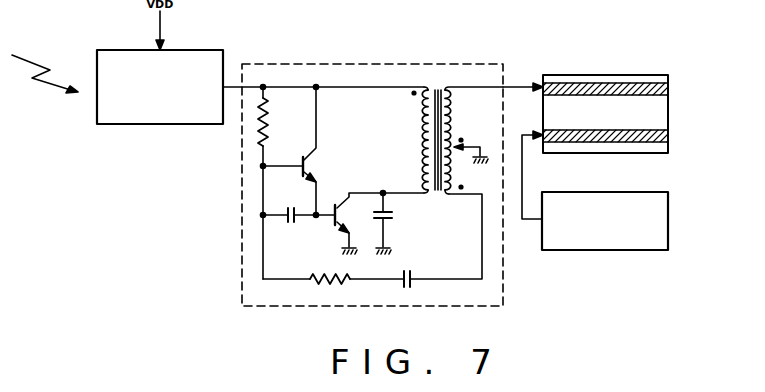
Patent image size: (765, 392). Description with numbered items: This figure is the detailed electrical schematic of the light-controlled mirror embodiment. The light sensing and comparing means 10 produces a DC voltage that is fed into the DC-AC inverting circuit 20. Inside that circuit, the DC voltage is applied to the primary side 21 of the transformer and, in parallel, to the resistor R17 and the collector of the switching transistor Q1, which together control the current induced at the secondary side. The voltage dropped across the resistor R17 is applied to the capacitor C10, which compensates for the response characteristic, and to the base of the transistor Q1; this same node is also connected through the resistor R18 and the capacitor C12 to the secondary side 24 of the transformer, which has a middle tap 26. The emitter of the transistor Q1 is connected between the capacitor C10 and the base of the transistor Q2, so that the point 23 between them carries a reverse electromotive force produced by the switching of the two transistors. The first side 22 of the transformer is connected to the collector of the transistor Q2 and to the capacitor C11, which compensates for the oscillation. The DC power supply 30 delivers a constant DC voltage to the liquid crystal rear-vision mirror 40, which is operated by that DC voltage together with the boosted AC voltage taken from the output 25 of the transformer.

The light sensing and comparing means 10 is at (201, 50).
The DC-AC inverting circuit 20 is at (366, 64).
The primary side of transformer T 21 is at (396, 88).
The first side of transformer 22 is at (385, 192).
The point 23 is at (265, 218).
The secondary side of transformer T 24 is at (458, 196).
The output of transformer T 25 is at (478, 89).
The middle tap 26 is at (478, 146).
The DC power supply 30 is at (606, 252).
The liquid crystal rear-vision mirror 40 is at (607, 75).
The resistor R17 is at (279, 126).
The resistor R18 is at (330, 271).
The capacitor C10 is at (299, 207).
The capacitor C11 is at (395, 223).
The capacitor C12 is at (411, 273).
The switching transistor Q1 is at (297, 151).
The transistor Q2 is at (359, 223).